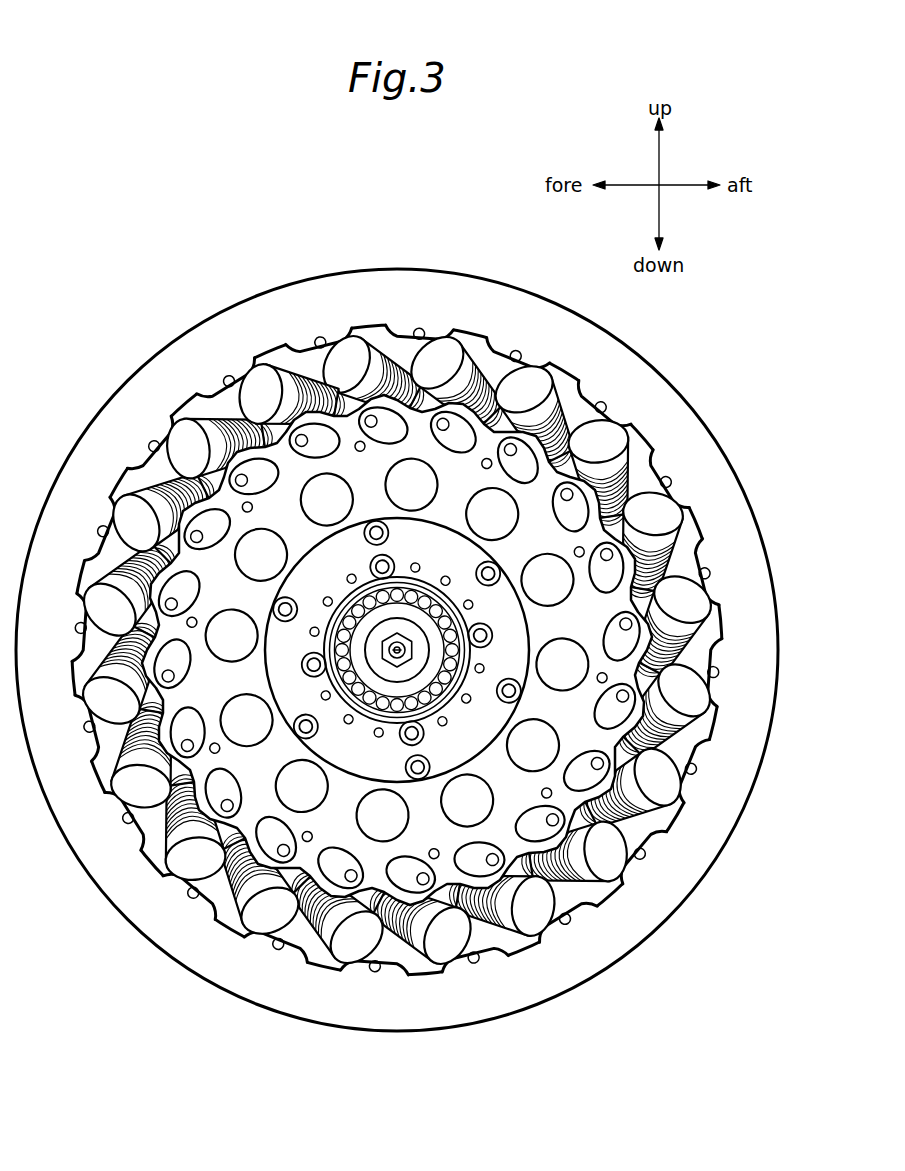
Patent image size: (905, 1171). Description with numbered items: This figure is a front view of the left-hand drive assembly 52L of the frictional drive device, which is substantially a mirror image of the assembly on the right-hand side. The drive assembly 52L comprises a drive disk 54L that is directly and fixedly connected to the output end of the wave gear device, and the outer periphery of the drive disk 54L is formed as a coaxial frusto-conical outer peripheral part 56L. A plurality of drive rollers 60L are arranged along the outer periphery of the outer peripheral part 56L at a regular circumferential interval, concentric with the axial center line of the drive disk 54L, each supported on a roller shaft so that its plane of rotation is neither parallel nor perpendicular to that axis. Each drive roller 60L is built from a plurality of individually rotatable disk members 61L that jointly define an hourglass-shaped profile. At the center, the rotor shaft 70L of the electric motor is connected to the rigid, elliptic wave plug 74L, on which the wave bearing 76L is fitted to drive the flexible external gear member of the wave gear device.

The drive assembly 52L is at (474, 620).
The drive disk 54L is at (610, 533).
The frusto-conical outer peripheral part 56L is at (695, 547).
The drive rollers 60L is at (453, 650).
The disk members 61L is at (688, 716).
The rotor shaft 70L is at (643, 838).
The wave plug 74L is at (397, 650).
The wave bearing 76L is at (413, 683).